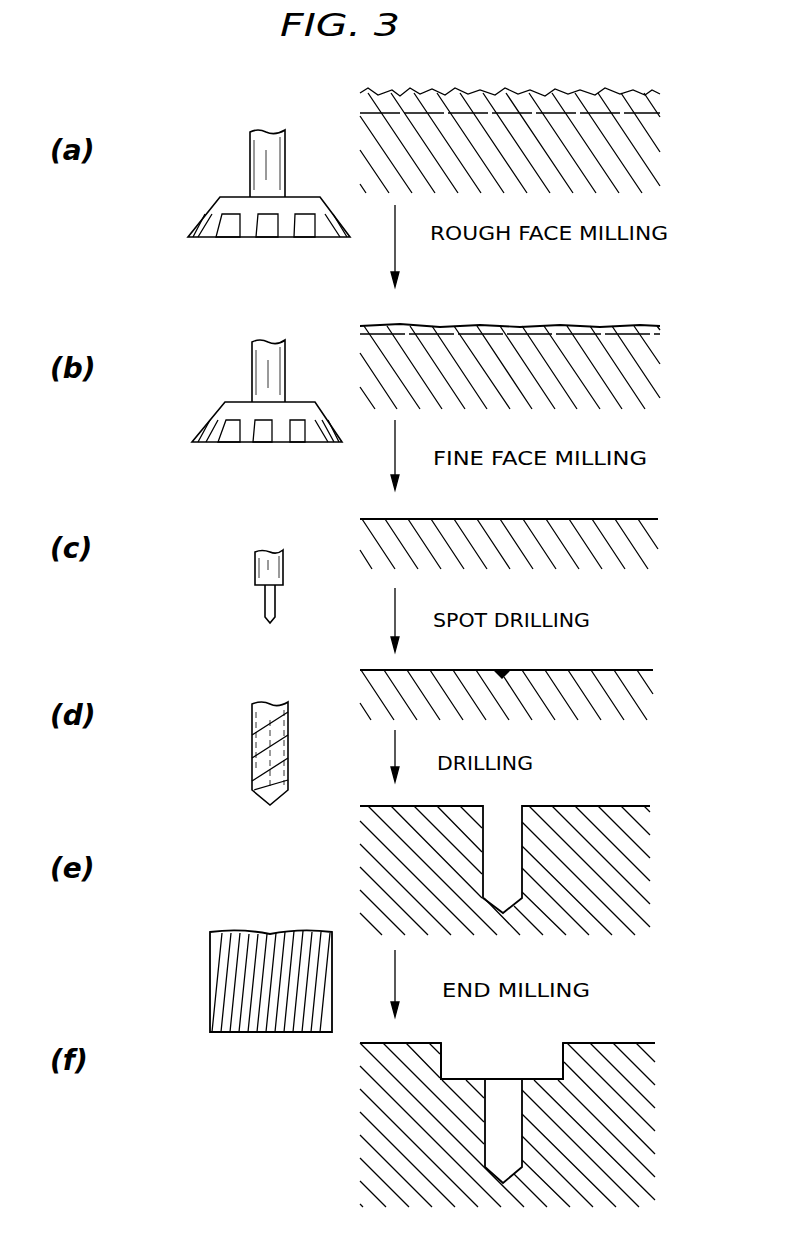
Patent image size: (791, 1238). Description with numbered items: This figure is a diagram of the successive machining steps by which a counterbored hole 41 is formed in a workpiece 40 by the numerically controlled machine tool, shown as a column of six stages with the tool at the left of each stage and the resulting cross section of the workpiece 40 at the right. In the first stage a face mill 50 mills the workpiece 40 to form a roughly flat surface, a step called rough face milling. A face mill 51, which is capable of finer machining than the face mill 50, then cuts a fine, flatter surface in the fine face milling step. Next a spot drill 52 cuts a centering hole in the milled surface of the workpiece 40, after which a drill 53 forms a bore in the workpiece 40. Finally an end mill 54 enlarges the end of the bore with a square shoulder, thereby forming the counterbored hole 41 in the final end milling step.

The workpiece 40 is at (621, 1016).
The counterbored hole 41 is at (500, 1062).
The face mill 50 is at (232, 197).
The face mill 51 is at (232, 404).
The spot drill 52 is at (252, 562).
The drill 53 is at (250, 755).
The end mill 54 is at (240, 932).